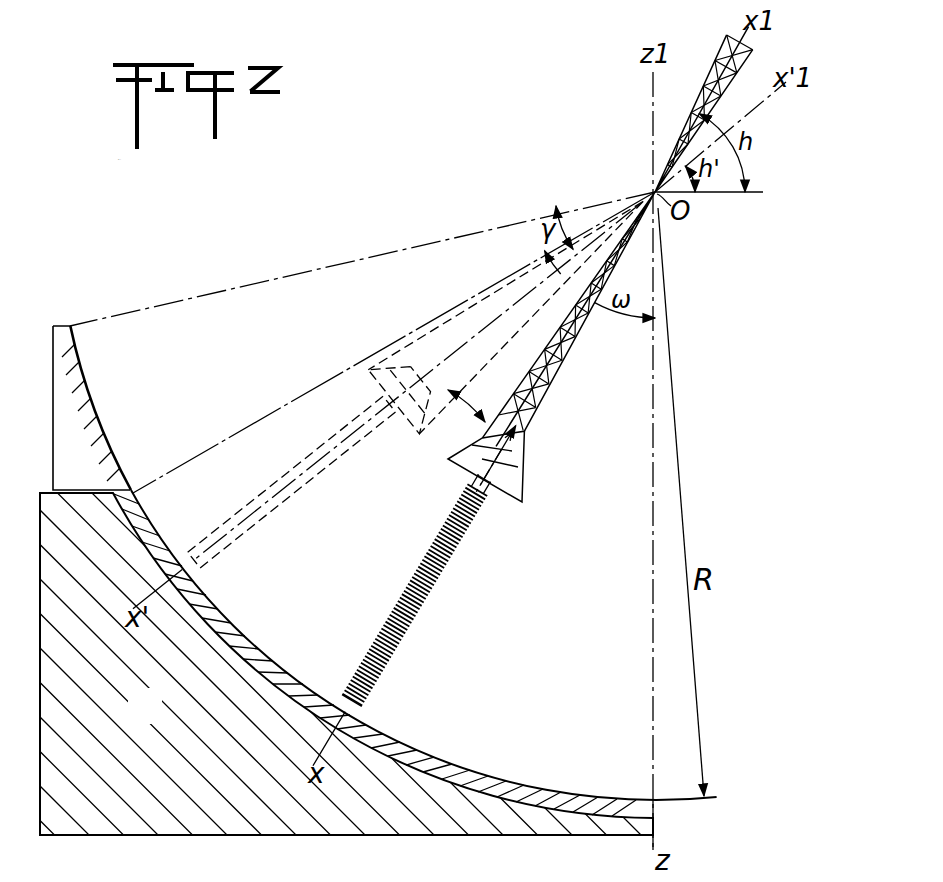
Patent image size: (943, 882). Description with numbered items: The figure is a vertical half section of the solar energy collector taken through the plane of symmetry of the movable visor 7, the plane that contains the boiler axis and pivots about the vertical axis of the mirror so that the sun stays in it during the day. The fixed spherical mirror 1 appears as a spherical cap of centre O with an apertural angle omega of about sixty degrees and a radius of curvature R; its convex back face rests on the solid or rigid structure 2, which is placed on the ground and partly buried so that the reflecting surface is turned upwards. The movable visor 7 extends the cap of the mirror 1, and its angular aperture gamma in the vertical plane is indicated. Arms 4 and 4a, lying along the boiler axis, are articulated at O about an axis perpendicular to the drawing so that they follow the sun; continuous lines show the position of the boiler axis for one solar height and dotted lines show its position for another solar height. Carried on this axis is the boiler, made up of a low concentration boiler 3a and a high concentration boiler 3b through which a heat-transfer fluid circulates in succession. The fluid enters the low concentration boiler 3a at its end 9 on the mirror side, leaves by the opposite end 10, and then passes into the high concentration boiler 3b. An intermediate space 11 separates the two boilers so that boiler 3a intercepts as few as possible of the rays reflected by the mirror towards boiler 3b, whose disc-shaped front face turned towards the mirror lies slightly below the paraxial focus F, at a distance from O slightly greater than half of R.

The spherical mirror 1 is at (467, 763).
The rigid structure 2 is at (471, 641).
The low concentration boiler 3a is at (443, 567).
The high concentration boiler 3b is at (517, 470).
The arm 4 is at (571, 365).
The arm 4a is at (680, 118).
The movable visor 7 is at (102, 427).
The end 9 is at (341, 696).
The end 10 is at (490, 500).
The intermediate space 11 is at (477, 481).
The paraxial focus F is at (521, 457).